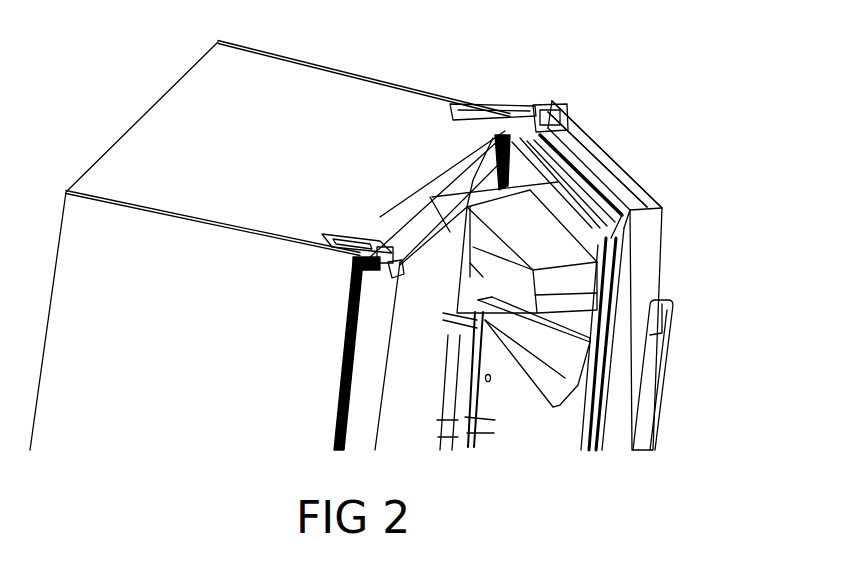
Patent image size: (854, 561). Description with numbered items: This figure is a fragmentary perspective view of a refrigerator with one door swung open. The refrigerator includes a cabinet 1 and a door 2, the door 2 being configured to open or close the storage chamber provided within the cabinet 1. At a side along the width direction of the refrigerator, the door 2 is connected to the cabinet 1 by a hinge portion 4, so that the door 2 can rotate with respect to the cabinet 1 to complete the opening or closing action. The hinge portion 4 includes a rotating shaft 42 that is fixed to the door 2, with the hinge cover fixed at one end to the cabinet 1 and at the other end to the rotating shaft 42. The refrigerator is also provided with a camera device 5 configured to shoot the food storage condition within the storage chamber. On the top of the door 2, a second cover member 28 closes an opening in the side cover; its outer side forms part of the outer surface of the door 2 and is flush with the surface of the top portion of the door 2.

The cabinet 1 is at (203, 98).
The door 2 is at (408, 233).
The hinge portion 4 is at (358, 262).
The camera device 5 is at (618, 330).
The second cover member 28 is at (594, 155).
The rotating shaft 42 is at (393, 267).